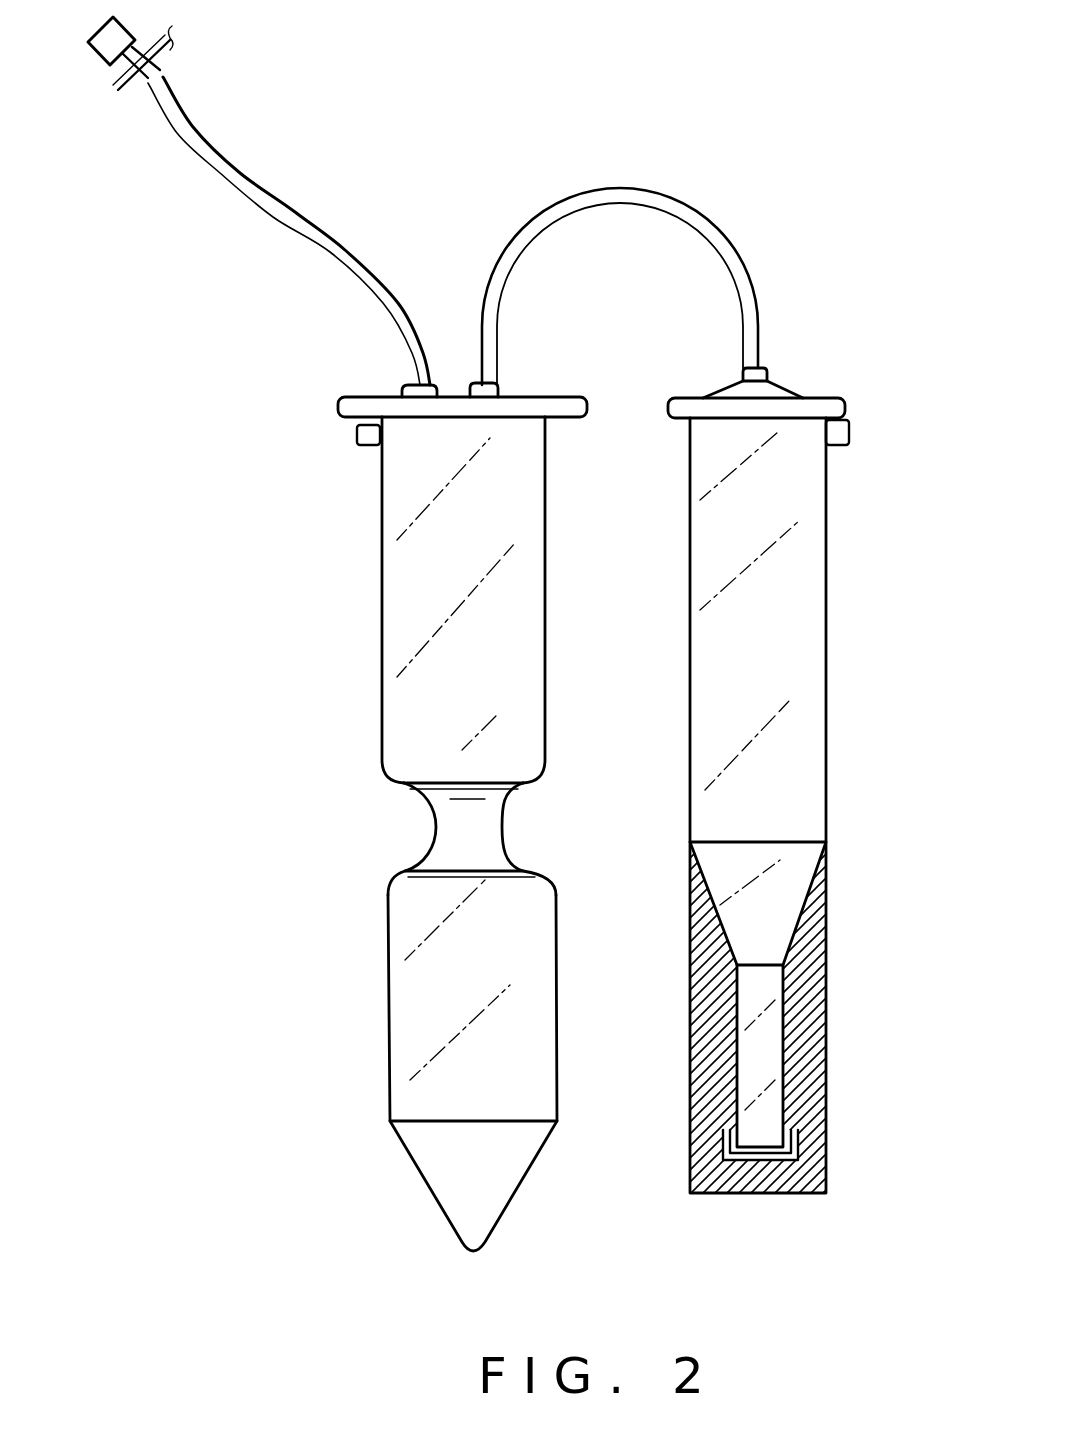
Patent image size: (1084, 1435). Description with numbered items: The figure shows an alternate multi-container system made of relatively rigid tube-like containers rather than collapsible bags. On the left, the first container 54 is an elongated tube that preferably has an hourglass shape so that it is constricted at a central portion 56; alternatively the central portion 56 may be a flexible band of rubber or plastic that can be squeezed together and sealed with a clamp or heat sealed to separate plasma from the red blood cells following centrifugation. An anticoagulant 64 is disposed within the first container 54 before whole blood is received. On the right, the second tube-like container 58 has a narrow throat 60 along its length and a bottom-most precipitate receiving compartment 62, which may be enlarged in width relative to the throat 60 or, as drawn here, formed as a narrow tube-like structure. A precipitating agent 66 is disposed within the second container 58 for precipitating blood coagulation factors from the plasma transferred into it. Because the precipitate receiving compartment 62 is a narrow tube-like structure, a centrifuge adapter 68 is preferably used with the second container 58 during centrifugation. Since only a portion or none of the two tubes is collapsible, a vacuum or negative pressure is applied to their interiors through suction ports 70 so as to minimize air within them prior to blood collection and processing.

The first container 54 is at (358, 708).
The central portion 56 is at (510, 837).
The second tube-like container 58 is at (853, 620).
The narrow throat 60 is at (795, 936).
The precipitate receiving compartment 62 is at (770, 1045).
The anticoagulant 64 is at (438, 1167).
The precipitating agent 66 is at (826, 745).
The centrifuge adapter 68 is at (814, 1190).
The suction ports 70 is at (355, 445).